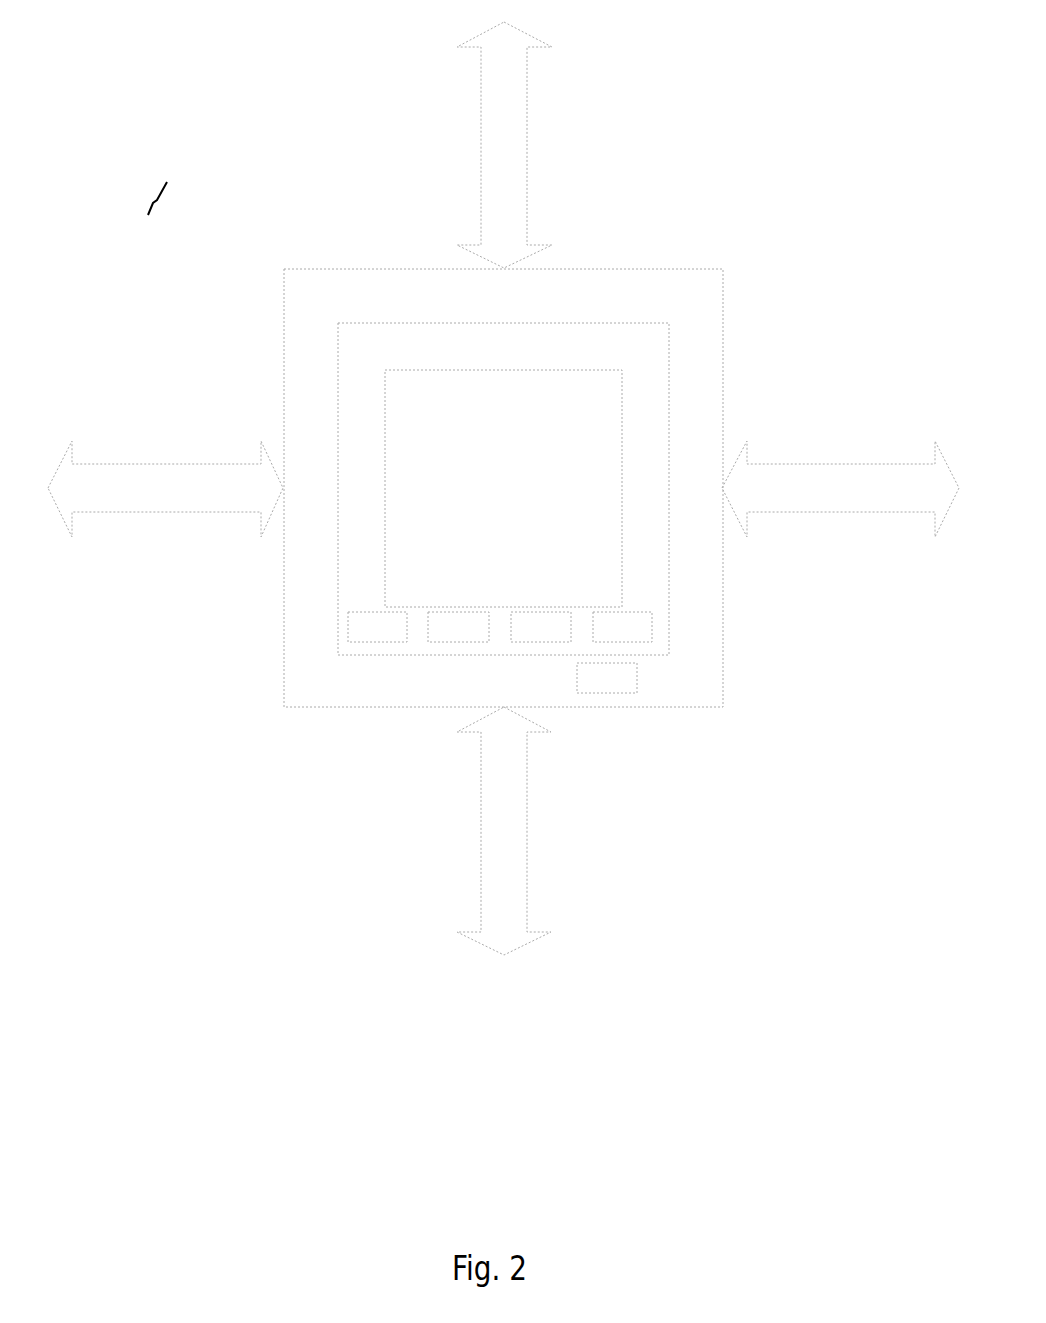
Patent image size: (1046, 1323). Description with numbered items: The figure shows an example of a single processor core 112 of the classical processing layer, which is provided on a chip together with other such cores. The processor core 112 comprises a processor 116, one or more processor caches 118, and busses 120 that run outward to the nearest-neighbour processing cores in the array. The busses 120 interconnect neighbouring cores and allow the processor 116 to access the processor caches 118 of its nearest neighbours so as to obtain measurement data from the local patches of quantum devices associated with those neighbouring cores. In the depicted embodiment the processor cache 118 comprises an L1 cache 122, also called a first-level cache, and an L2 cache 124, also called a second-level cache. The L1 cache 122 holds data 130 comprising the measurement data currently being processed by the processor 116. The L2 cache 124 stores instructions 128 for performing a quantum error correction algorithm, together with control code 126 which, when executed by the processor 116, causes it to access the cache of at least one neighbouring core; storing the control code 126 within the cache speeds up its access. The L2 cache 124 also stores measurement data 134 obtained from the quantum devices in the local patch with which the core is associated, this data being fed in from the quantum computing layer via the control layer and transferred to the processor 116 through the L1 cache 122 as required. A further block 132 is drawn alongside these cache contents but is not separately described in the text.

The processor core 112 is at (794, 200).
The processor 116 is at (593, 470).
The processor cache 118 is at (143, 193).
The busses 120 is at (518, 206).
The L1 cache 122 is at (363, 350).
The L2 cache 124 is at (315, 383).
The control code 126 is at (363, 642).
The instructions 128 is at (455, 642).
The data 130 is at (540, 613).
The sensor module 132 is at (622, 613).
The measurement data 134 is at (623, 692).